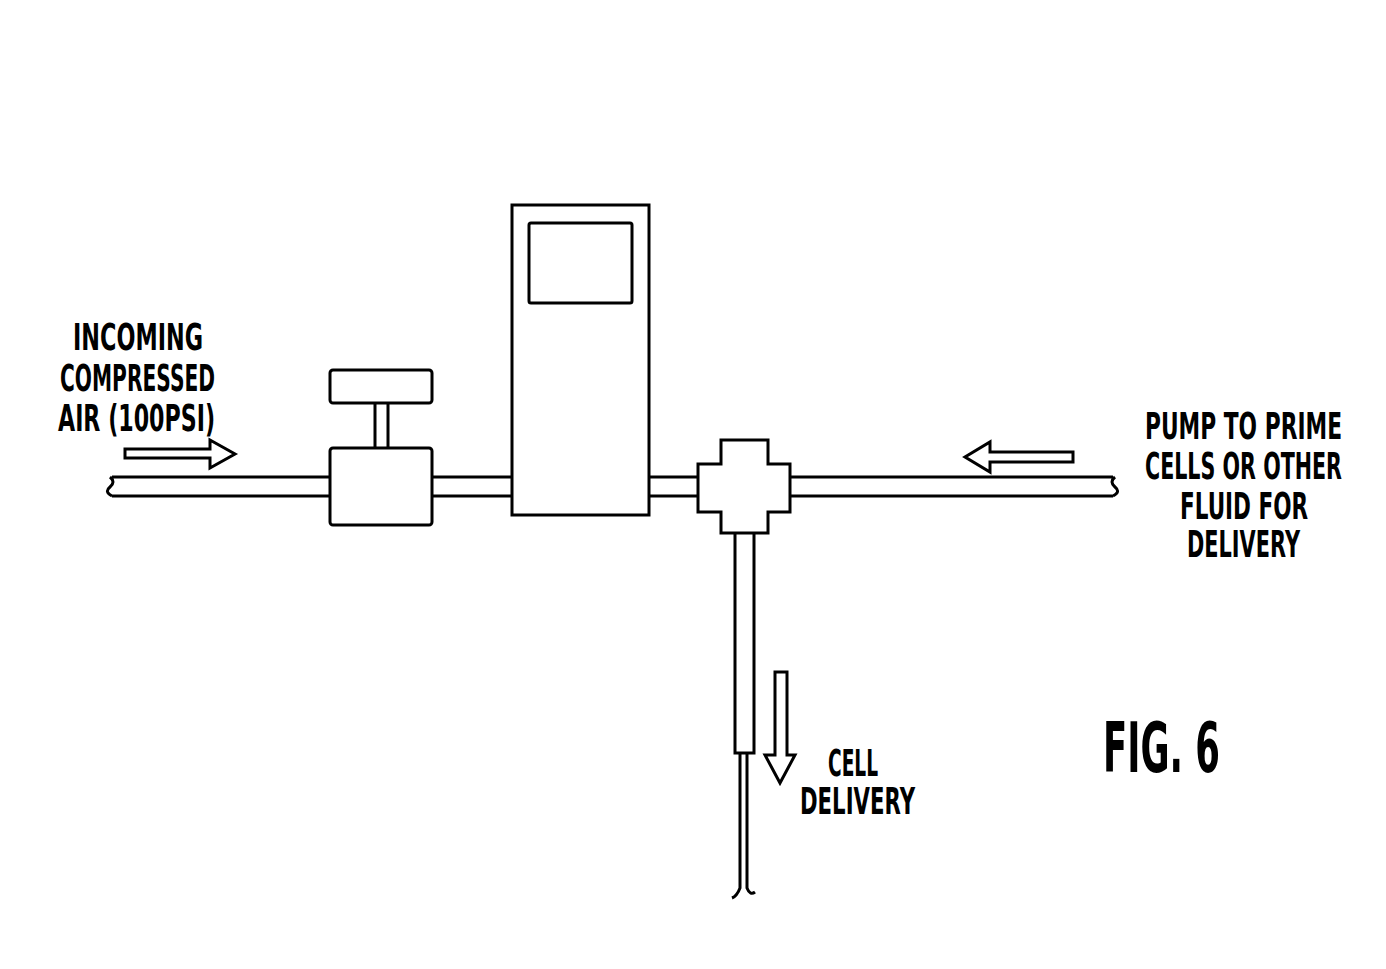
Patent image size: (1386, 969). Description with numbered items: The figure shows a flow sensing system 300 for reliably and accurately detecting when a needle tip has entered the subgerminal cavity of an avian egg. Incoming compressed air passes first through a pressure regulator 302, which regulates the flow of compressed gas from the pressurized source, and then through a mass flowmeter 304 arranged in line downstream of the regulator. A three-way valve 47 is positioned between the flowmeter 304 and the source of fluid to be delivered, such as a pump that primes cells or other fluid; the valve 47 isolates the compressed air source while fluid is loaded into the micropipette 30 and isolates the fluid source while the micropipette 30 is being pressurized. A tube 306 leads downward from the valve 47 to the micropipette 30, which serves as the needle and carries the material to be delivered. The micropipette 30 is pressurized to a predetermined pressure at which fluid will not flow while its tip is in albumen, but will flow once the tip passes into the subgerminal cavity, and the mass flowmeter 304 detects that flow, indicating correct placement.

The flow sensing system 300 is at (924, 151).
The pressure regulator 302 is at (365, 326).
The mass flowmeter 304 is at (680, 273).
The three-way valve 47 is at (799, 413).
The tube 306 is at (769, 574).
The micropipette 30 is at (728, 811).